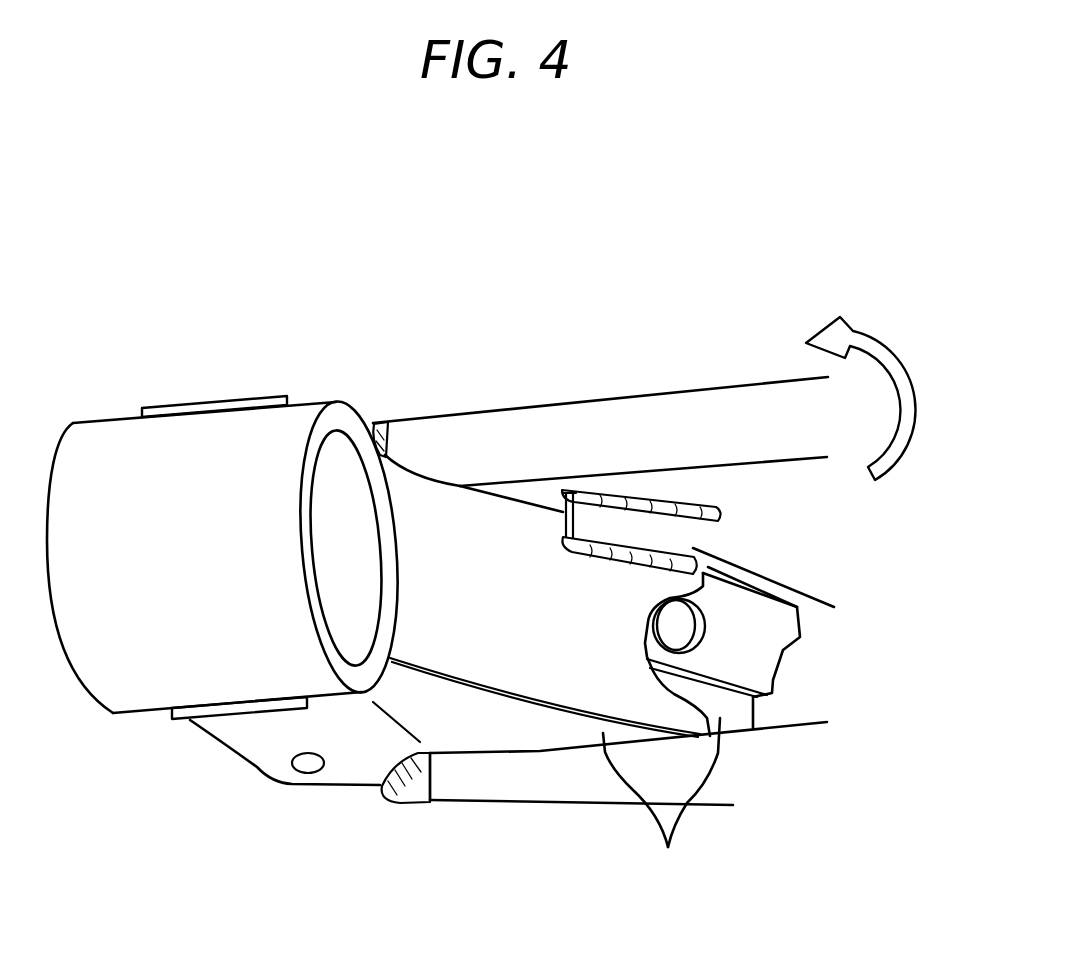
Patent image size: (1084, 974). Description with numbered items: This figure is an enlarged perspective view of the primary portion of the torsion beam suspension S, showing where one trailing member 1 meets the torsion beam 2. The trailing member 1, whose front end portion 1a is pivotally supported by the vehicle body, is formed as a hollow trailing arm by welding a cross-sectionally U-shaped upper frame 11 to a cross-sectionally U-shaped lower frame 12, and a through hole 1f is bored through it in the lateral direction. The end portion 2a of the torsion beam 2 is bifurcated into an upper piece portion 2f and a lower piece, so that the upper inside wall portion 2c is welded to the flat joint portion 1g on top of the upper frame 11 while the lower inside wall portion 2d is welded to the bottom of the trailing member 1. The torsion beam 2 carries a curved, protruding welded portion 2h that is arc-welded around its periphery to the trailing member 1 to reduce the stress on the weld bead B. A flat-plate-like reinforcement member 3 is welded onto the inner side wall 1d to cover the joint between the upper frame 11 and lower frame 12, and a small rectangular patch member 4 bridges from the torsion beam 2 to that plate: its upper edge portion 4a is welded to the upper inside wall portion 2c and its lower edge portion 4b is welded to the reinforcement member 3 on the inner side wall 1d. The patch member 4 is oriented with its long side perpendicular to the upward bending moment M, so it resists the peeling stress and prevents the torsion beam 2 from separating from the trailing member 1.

The trailing member 1 is at (122, 752).
The front end portion 1a is at (163, 408).
The inner side wall 1d is at (512, 723).
The through hole 1f is at (697, 630).
The flat joint portion 1g is at (423, 477).
The torsion beam 2 is at (517, 392).
The end portion of the torsion beam 2a is at (405, 418).
The upper inside wall portion 2c is at (548, 493).
The lower inside wall portion 2d is at (560, 736).
The upper piece portion 2f is at (483, 408).
The welded portion 2h is at (373, 423).
The reinforcement member 3 is at (462, 653).
The patch member 4 is at (690, 538).
The upper edge portion 4a is at (637, 493).
The lower edge portion 4b is at (700, 551).
The upper frame 11 is at (763, 680).
The lower frame 12 is at (661, 804).
The weld bead B is at (598, 558).
The torsion beam suspension S is at (500, 228).
The bending moment M is at (880, 398).